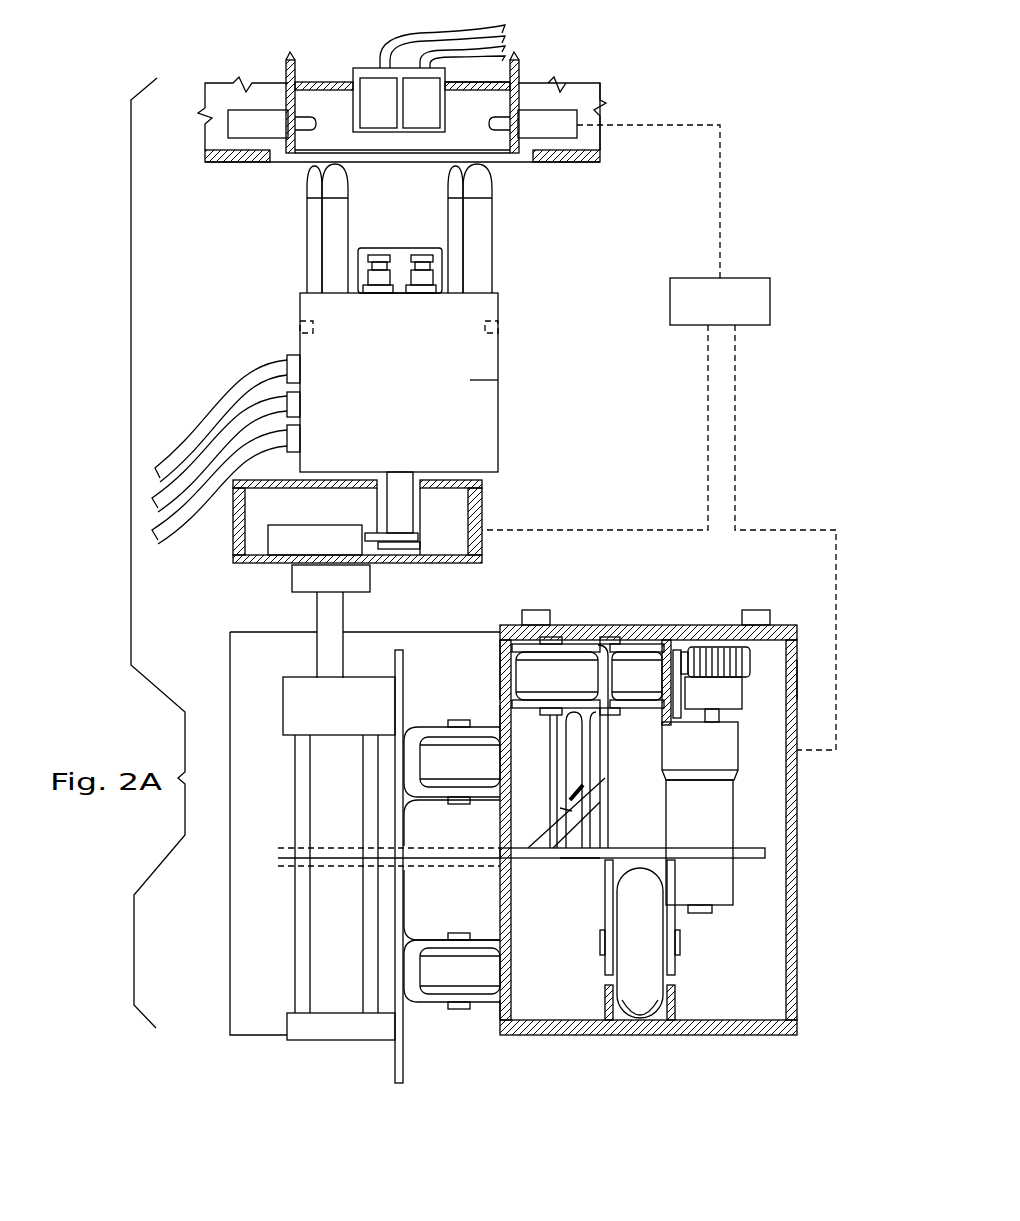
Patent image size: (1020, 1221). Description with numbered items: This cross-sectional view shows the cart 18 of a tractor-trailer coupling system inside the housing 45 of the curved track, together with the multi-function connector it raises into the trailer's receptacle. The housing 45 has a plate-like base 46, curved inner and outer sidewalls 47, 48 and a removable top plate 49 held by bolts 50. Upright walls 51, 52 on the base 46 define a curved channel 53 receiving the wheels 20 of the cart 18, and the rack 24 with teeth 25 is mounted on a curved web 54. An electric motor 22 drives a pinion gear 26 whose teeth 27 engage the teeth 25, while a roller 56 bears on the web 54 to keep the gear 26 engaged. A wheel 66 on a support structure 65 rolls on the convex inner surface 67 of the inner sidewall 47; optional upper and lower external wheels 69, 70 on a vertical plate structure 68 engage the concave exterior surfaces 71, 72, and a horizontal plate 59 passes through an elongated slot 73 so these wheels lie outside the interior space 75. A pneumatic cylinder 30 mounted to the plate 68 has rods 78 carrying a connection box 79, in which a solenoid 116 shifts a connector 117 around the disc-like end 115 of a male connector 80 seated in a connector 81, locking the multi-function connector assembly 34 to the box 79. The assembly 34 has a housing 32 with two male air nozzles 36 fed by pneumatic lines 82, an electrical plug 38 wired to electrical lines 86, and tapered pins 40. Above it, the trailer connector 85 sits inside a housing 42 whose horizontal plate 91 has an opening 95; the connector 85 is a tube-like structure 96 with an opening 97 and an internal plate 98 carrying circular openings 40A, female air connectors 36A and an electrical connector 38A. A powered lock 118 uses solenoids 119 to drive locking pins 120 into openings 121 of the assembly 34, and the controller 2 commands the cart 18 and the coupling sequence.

The controller 2 is at (735, 278).
The cart 18 is at (580, 860).
The rollers or wheels 20 is at (641, 1006).
The electric motor 22 is at (724, 798).
The curved rack 24 is at (677, 650).
The teeth 25 is at (689, 655).
The pinion gear 26 is at (750, 668).
The teeth 27 is at (755, 652).
The pneumatic cylinder 30 is at (330, 1040).
The housing 32 is at (498, 436).
The multi-function connector assembly 34 is at (498, 384).
The male air nozzles 36 is at (380, 262).
The female air connectors 36A is at (372, 120).
The electrical plug 38 is at (424, 262).
The electrical connector 38A is at (470, 140).
The tapered pins 40 is at (330, 237).
The circular openings 40A is at (326, 85).
The housing 42 is at (594, 168).
The housing 45 is at (798, 885).
The base 46 is at (695, 1036).
The inner sidewall 47 is at (500, 660).
The outer sidewall 48 is at (797, 662).
The top plate 49 is at (592, 625).
The bolts 50 is at (540, 610).
The upright wall 51 is at (605, 1003).
The upright wall 52 is at (678, 1001).
The curved channel 53 is at (654, 992).
The curved web 54 is at (665, 648).
The roller 56 is at (635, 690).
The horizontal plate 59 is at (736, 856).
The support structure 65 is at (612, 828).
The wheel 66 is at (530, 666).
The inner surface 67 is at (506, 738).
The vertical plate structure 68 is at (405, 904).
The upper external wheel 69 is at (440, 756).
The lower external wheel 70 is at (450, 978).
The exterior surface 71 is at (500, 705).
The lower exterior surface 72 is at (496, 1020).
The elongated slot 73 is at (480, 862).
The interior space 75 is at (588, 946).
The rods 78 is at (318, 628).
The connection box 79 is at (245, 531).
The male connector 80 is at (482, 490).
The connector 81 is at (482, 519).
The pneumatic lines 82 is at (192, 434).
The connector 85 is at (291, 158).
The electrical lines 86 is at (228, 405).
The horizontal plate 91 is at (568, 165).
The opening 95 is at (528, 160).
The tube-like structure 96 is at (282, 163).
The opening 97 is at (304, 158).
The horizontal plate 98 is at (300, 120).
The disc-like end 115 is at (396, 550).
The solenoid 116 is at (283, 555).
The connector 117 is at (482, 504).
The powered lock 118 is at (585, 108).
The solenoids 119 is at (206, 128).
The locking pins 120 is at (240, 126).
The openings 121 is at (300, 327).